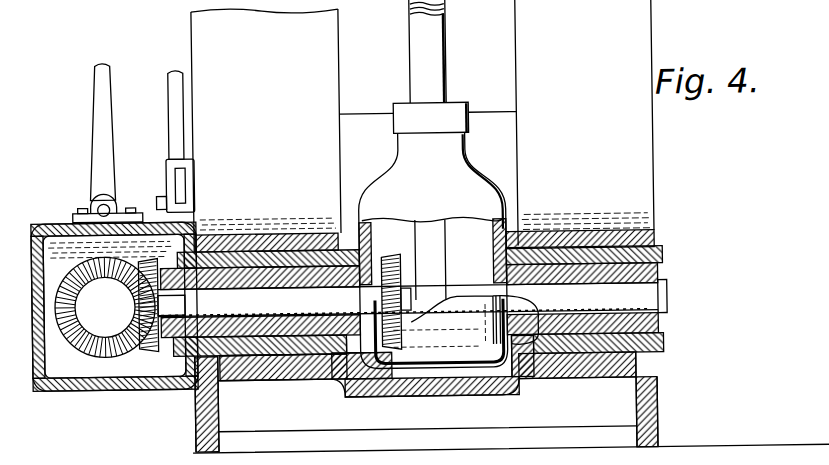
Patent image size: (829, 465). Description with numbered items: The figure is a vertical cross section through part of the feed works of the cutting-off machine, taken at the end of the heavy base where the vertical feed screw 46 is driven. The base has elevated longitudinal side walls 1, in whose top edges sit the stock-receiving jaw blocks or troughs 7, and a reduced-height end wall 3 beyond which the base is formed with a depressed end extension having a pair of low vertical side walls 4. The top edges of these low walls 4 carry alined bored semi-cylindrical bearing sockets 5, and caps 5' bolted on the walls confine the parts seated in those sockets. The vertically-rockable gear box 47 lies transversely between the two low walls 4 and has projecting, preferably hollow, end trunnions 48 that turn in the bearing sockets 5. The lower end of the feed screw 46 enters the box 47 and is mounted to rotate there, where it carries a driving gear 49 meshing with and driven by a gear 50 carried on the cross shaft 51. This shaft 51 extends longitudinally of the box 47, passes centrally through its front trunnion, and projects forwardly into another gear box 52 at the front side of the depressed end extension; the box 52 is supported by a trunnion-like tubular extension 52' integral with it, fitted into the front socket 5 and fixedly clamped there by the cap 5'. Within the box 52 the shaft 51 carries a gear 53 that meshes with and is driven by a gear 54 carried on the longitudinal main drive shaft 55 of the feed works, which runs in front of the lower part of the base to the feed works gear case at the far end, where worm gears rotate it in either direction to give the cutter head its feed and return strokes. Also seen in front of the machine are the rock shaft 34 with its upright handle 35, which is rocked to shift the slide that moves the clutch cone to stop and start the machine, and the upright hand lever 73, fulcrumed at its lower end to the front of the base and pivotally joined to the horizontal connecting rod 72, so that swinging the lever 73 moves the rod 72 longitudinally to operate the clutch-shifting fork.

The side walls 1 is at (584, 123).
The end wall 3 is at (358, 126).
The low vertical side walls 4 is at (505, 393).
The bearing sockets 5 is at (426, 336).
The caps 5' is at (436, 219).
The stock-receiving jaw blocks 7 is at (266, 130).
The rock shaft 34 is at (89, 204).
The upright handle 35 is at (96, 109).
The feed screw 46 is at (456, 48).
The gear box 47 is at (380, 172).
The end trunnions 48 is at (166, 336).
The driving gear 49 is at (478, 344).
The gear 50 is at (387, 256).
The cross shaft 51 is at (412, 299).
The gear box 52 is at (115, 321).
The tubular extension 52' is at (293, 375).
The gear 53 is at (147, 343).
The gear 54 is at (77, 338).
The main drive shaft 55 is at (105, 307).
The connecting rod 72 is at (171, 183).
The hand lever 73 is at (178, 103).